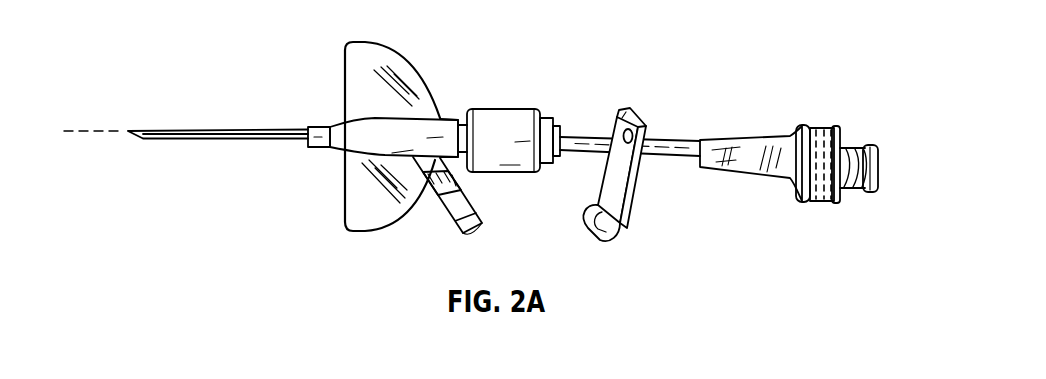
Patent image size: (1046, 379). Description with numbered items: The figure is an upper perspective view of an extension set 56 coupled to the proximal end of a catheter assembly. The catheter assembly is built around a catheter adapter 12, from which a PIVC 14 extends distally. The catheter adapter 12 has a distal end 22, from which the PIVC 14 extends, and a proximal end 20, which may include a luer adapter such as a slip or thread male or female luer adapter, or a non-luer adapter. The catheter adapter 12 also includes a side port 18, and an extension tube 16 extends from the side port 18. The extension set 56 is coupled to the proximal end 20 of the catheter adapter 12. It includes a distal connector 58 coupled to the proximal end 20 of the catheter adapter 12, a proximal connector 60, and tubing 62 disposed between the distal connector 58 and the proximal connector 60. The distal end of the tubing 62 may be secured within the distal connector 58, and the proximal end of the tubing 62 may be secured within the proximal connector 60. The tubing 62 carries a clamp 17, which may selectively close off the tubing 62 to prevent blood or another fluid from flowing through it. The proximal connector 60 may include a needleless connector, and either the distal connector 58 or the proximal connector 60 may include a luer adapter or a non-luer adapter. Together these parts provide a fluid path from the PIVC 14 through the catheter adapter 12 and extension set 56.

The catheter adapter 12 is at (415, 128).
The PIVC 14 is at (173, 128).
The extension tube 16 is at (463, 237).
The side port 18 is at (432, 193).
The proximal end 20 is at (450, 122).
The distal end 22 is at (335, 121).
The extension set 56 is at (672, 132).
The distal connector 58 is at (505, 128).
The proximal connector 60 is at (750, 150).
The tubing 62 is at (685, 155).
The clamp 17 is at (616, 115).